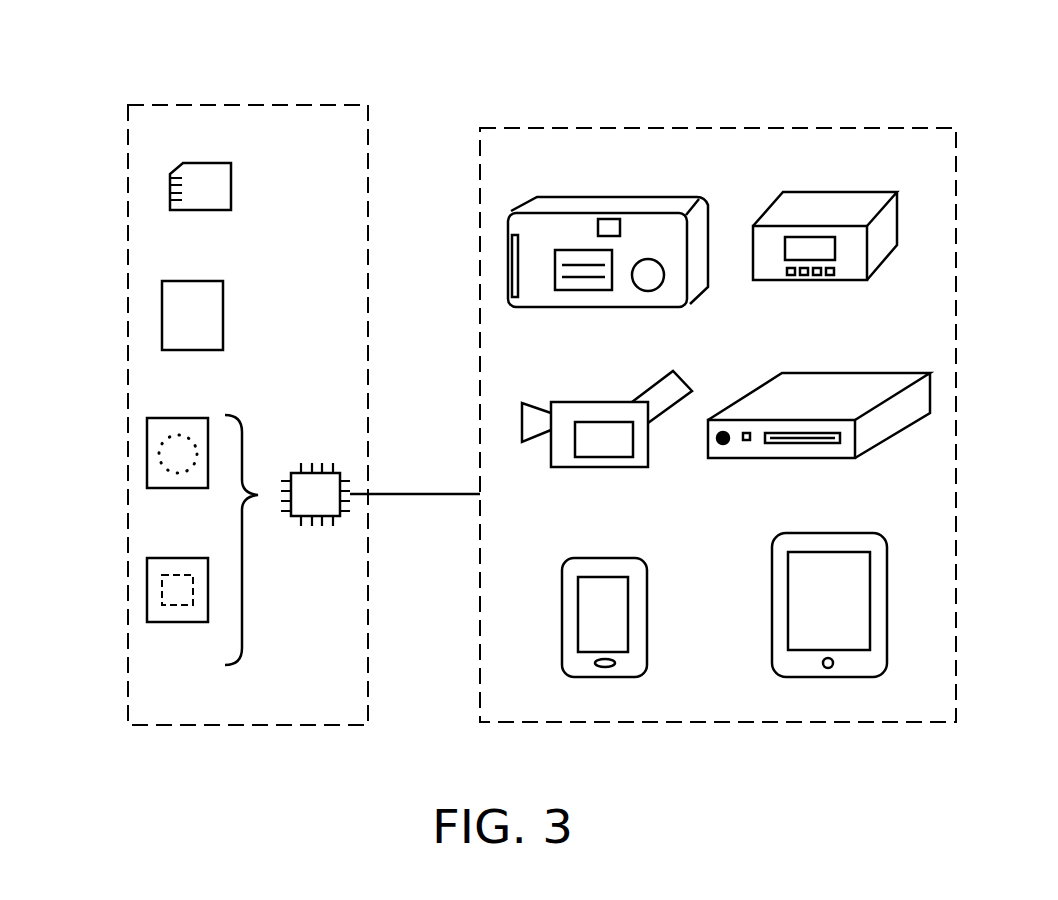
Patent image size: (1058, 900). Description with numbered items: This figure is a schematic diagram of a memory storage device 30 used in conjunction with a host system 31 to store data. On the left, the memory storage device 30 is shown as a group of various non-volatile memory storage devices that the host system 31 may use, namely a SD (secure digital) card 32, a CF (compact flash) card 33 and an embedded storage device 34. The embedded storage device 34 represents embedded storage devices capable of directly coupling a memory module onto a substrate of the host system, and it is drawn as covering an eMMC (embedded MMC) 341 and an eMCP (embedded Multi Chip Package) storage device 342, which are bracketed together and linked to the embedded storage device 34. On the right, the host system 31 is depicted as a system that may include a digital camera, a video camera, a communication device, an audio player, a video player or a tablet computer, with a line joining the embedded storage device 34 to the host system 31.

The memory storage device 30 is at (237, 105).
The host system 31 is at (642, 128).
The SD card 32 is at (170, 190).
The CF card 33 is at (162, 317).
The embedded storage device 34 is at (318, 470).
The eMMC 341 is at (147, 456).
The eMCP storage device 342 is at (147, 592).